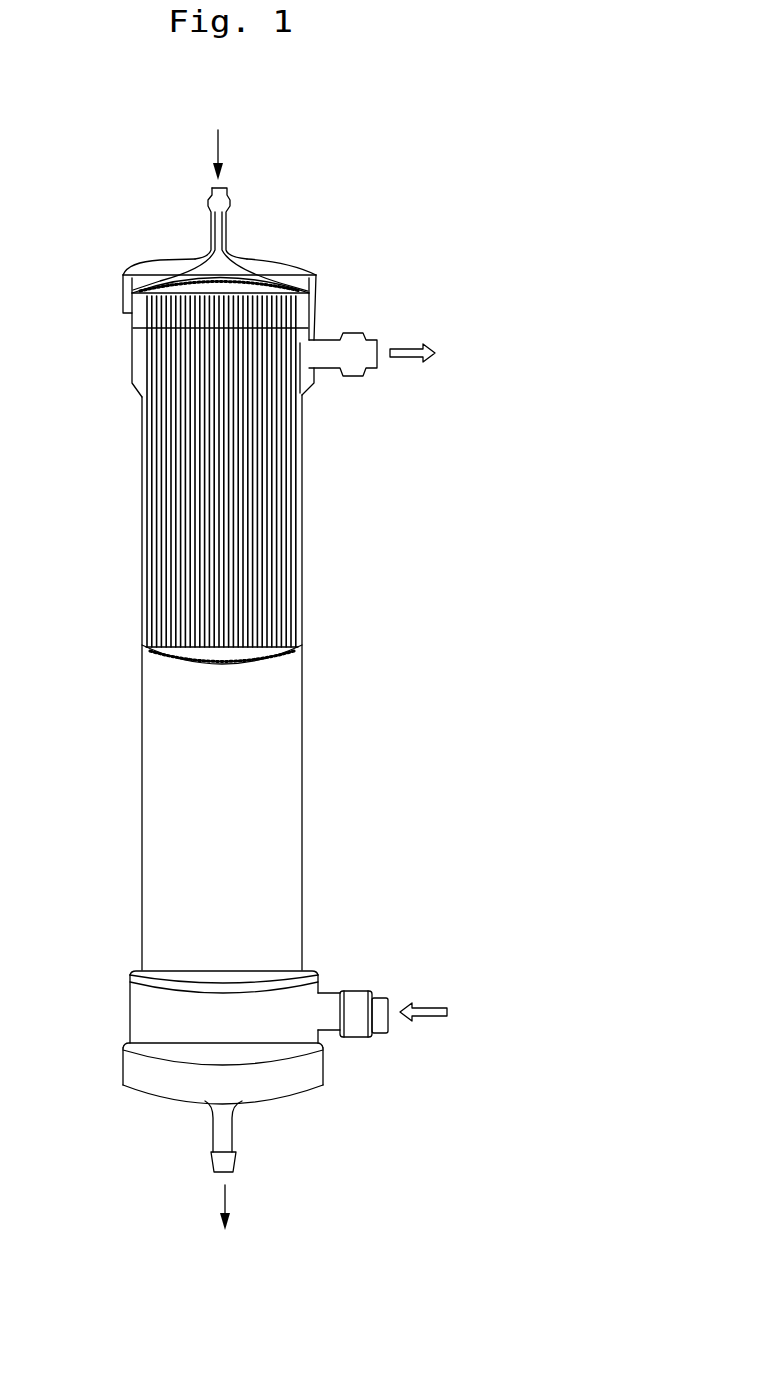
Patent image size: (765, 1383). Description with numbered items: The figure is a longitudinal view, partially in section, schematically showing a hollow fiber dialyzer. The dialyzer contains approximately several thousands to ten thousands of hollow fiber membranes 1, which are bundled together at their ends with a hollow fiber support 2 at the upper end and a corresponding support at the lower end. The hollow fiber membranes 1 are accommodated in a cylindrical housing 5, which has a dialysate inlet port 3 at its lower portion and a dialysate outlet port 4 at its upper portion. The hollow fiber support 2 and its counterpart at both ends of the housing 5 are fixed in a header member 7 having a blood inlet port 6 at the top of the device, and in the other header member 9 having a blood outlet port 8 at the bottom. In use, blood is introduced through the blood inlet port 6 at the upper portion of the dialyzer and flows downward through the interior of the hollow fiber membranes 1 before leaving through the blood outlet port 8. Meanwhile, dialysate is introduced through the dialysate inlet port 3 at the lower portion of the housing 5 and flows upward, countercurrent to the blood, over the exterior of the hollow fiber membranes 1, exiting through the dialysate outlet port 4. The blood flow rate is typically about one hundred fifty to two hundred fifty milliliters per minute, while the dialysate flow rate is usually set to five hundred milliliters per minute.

The hollow fiber membranes 1 is at (273, 560).
The hollow fiber support 2 is at (302, 312).
The dialysate inlet port 3 is at (357, 1037).
The dialysate outlet port 4 is at (350, 377).
The cylindrical housing 5 is at (133, 821).
The blood inlet port 6 is at (237, 222).
The header member 7 is at (295, 267).
The blood outlet port 8 is at (233, 1130).
The header member 9 is at (155, 1077).